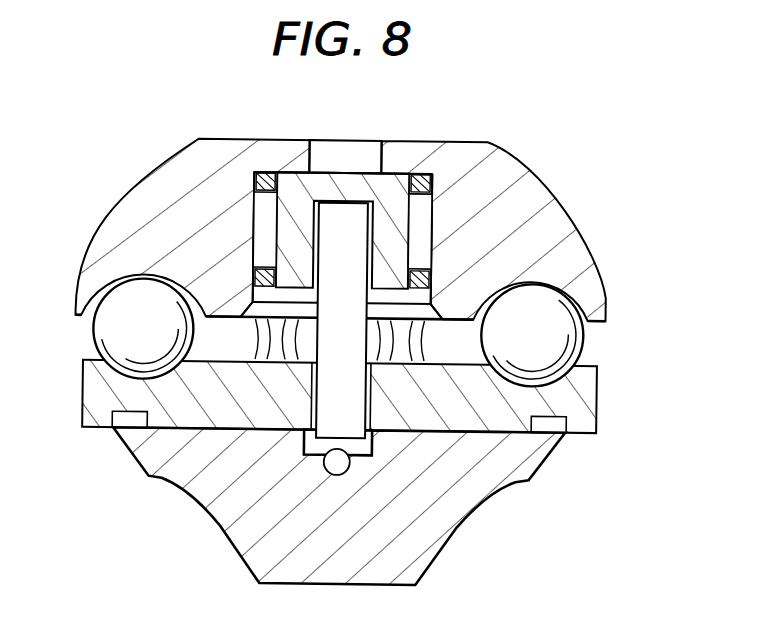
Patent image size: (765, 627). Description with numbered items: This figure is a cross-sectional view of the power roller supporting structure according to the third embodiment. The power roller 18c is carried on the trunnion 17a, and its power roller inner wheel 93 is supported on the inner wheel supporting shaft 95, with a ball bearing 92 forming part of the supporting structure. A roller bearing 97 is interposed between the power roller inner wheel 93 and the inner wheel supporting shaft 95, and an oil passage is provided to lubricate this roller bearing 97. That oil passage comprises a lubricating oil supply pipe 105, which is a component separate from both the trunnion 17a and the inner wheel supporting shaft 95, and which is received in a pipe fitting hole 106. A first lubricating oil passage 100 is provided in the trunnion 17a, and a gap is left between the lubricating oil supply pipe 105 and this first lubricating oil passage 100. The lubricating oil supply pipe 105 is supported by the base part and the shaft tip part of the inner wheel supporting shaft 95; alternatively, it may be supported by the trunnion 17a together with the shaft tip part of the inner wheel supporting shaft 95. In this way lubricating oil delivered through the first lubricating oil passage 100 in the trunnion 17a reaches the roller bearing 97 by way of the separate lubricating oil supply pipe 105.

The power roller 18c is at (107, 181).
The power roller inner wheel 93 is at (547, 203).
The inner wheel supporting shaft 95 is at (357, 162).
The roller bearing 97 is at (254, 215).
The pipe fitting hole 106 is at (362, 254).
The ball bearing 92 is at (563, 342).
The lubricating oil supply pipe 105 is at (353, 398).
The first lubricating oil passage 100 is at (338, 462).
The trunnion 17a is at (212, 475).